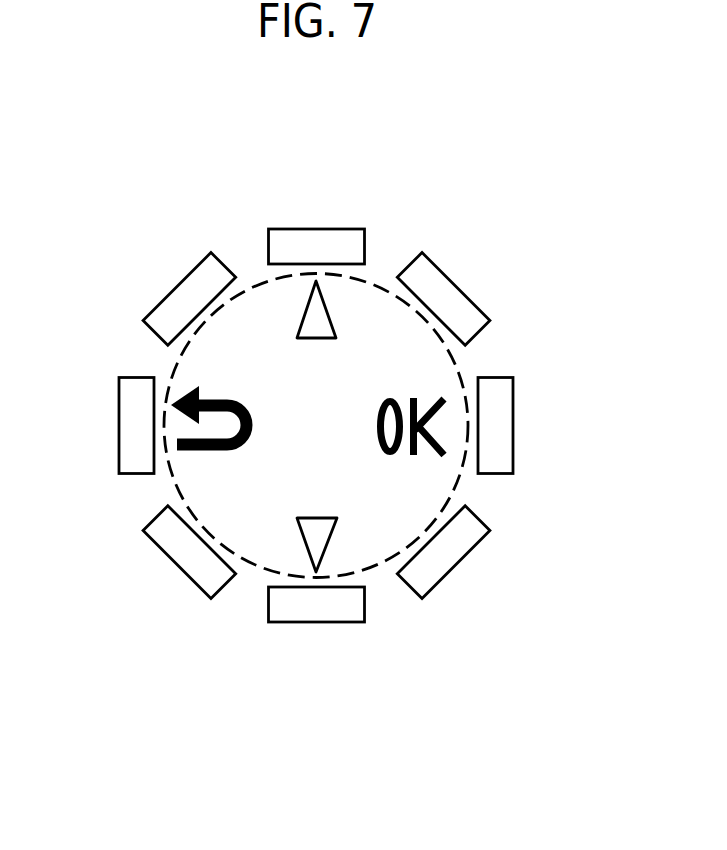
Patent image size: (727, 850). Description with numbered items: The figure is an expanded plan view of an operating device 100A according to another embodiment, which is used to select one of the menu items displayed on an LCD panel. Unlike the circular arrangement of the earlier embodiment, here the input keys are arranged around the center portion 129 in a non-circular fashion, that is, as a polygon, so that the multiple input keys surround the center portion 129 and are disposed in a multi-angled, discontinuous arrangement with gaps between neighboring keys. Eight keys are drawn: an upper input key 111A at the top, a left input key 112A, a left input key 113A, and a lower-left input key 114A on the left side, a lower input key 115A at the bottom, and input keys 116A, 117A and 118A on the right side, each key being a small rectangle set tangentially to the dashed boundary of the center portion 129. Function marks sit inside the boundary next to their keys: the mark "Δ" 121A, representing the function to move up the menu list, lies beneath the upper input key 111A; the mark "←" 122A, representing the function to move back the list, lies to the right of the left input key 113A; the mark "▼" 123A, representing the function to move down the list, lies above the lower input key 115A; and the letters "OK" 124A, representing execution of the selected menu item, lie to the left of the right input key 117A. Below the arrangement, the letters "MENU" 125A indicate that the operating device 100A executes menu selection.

The operating device 100A is at (412, 188).
The upper input key 111A is at (321, 229).
The left input key 112A is at (183, 282).
The lower input key 113A is at (120, 425).
The right input key 114A is at (175, 568).
The input key 115A is at (365, 612).
The input key 116A is at (462, 562).
The input key 117A is at (513, 425).
The input key 118A is at (483, 271).
The mark "Δ" 121A is at (302, 325).
The mark "←" 122A is at (215, 451).
The mark "▼" 123A is at (317, 518).
The letters "OK" 124A is at (413, 398).
The letters "MENU" 125A is at (304, 730).
The center portion 129 is at (462, 477).